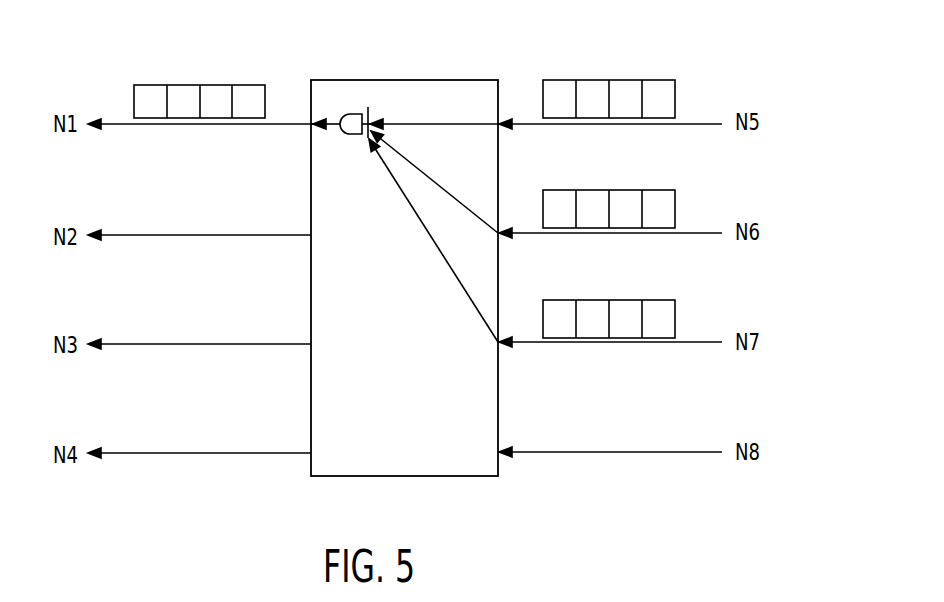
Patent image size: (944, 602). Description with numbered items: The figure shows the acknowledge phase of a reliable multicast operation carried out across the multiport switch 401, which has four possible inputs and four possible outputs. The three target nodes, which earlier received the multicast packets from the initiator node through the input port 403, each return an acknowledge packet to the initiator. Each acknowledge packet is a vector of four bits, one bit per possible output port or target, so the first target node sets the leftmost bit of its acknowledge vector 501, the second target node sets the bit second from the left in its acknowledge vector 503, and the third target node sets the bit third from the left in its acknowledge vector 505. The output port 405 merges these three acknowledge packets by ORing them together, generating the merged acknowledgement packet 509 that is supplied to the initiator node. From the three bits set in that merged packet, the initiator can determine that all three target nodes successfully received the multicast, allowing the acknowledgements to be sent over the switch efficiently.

The multiport switch 401 is at (423, 447).
The input port 403 is at (500, 122).
The output port 405 is at (348, 97).
The acknowledge packet 501 is at (660, 80).
The acknowledge packet 503 is at (645, 185).
The acknowledge packet 505 is at (645, 295).
The merged acknowledgement packet 509 is at (230, 82).